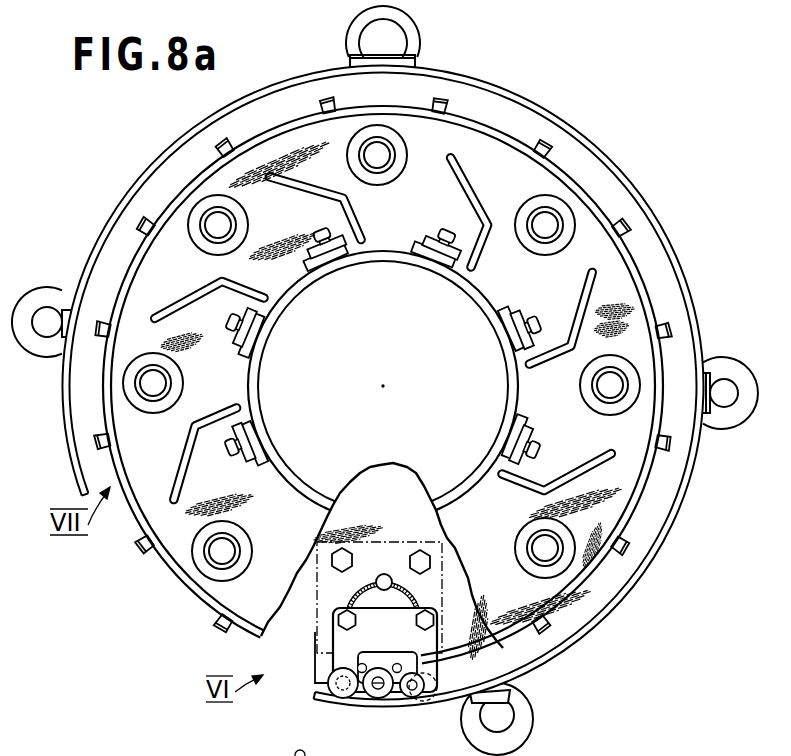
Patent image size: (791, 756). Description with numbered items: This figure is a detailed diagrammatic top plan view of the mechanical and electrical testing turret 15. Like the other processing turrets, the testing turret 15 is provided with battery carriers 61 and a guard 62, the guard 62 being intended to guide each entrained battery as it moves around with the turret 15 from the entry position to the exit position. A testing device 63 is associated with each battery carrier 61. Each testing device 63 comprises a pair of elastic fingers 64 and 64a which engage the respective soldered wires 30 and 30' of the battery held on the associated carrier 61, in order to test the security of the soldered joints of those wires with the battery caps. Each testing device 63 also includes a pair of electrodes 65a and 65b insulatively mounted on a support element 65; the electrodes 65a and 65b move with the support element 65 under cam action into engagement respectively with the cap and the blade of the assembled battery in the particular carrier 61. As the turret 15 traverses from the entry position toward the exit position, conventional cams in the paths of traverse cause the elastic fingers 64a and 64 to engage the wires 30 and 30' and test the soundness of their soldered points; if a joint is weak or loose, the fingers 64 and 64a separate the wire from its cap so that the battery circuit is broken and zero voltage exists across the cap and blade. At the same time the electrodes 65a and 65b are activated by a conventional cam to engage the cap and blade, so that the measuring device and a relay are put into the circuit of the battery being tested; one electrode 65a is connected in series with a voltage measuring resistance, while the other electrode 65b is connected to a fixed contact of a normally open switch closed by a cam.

The testing turret 15 is at (617, 283).
The soldered wire 30 is at (415, 705).
The soldered wire 30' is at (381, 703).
The carrier 61 is at (578, 190).
The guard 62 is at (500, 88).
The testing device 63 is at (373, 533).
The elastic finger 64 is at (363, 664).
The elastic finger 64a is at (397, 664).
The support element 65 is at (347, 643).
The electrode 65a is at (340, 698).
The electrode 65b is at (427, 692).